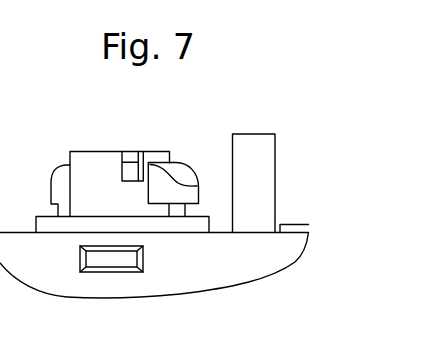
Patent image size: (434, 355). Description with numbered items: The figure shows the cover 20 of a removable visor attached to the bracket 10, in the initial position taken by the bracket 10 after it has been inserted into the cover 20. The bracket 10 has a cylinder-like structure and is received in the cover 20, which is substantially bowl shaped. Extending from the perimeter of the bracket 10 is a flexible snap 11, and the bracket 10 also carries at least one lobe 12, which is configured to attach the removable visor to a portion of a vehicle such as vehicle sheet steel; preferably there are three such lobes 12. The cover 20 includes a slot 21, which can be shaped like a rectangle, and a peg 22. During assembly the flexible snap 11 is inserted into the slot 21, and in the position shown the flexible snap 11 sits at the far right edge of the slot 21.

The bracket 10 is at (92, 156).
The flexible snap 11 is at (125, 258).
The lobe 12 is at (182, 170).
The cover 20 is at (237, 270).
The slot 21 is at (95, 275).
The peg 22 is at (270, 164).